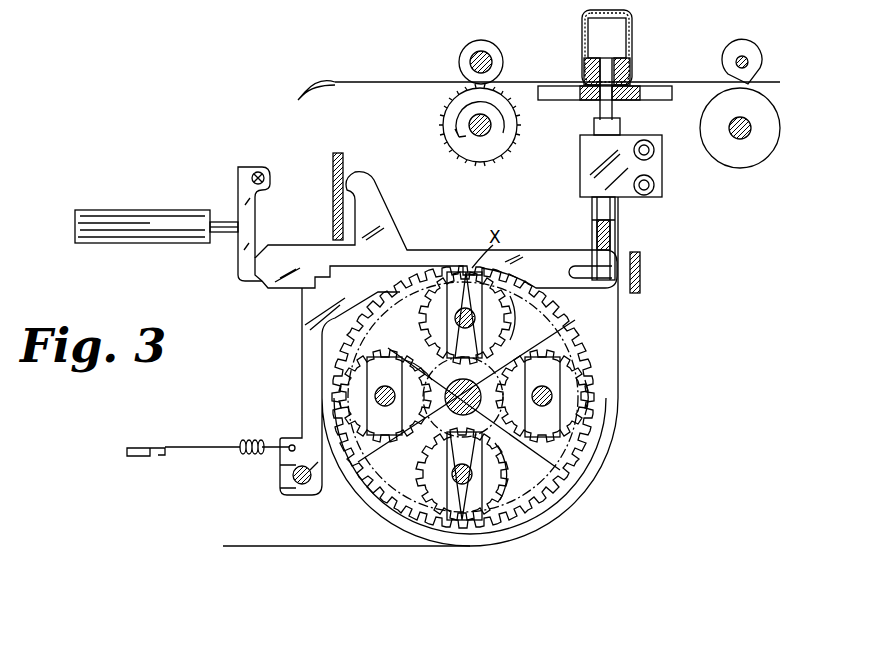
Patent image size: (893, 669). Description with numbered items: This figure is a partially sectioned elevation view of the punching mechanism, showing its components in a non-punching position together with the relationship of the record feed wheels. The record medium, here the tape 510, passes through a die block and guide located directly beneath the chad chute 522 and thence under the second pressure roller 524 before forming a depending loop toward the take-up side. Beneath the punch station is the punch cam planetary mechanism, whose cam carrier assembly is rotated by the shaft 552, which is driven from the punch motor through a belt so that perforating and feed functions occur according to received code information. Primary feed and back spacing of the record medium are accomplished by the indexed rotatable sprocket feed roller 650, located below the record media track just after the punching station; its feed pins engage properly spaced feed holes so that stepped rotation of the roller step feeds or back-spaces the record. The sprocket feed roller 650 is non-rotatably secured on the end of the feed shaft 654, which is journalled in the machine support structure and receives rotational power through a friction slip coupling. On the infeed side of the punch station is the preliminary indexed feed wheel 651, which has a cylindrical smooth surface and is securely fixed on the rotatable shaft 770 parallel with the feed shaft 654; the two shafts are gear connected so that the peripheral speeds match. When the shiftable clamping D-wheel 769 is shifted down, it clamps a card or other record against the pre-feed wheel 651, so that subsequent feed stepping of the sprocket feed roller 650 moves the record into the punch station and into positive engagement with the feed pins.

The tape 510 is at (417, 82).
The second pressure roller 524 is at (500, 58).
The chad chute 522 is at (633, 33).
The shiftable clamping D-wheel 769 is at (745, 48).
The rotatable shaft 770 is at (738, 116).
The preliminary indexed feed wheel 651 is at (737, 158).
The sprocket feed roller 650 is at (444, 126).
The feed shaft 654 is at (491, 126).
The shaft of cam carrier assembly 552 is at (415, 442).